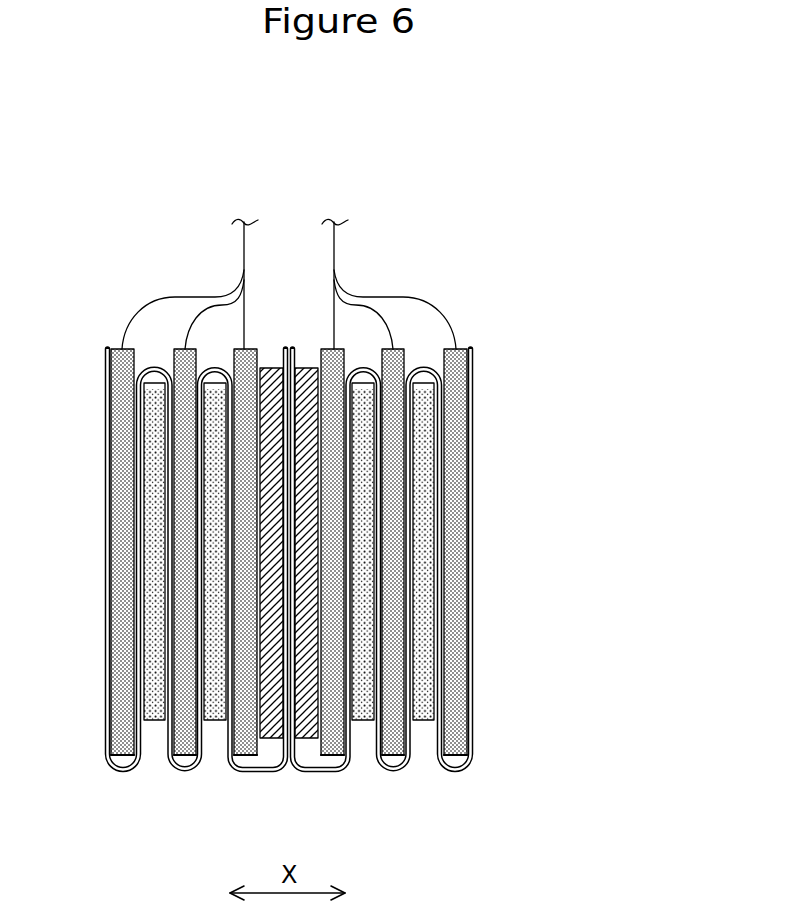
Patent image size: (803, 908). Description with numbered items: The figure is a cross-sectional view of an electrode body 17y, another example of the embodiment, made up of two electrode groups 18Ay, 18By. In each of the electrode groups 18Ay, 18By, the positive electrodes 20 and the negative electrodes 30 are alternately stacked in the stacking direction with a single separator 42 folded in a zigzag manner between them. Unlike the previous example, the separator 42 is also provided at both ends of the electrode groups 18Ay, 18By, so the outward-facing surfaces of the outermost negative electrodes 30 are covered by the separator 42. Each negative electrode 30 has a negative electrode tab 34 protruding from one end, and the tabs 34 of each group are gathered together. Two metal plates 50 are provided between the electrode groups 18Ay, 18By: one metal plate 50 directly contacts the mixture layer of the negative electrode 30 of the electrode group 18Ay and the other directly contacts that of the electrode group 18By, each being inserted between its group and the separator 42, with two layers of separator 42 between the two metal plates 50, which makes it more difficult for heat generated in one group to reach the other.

The electrode body 17y is at (538, 218).
The electrode group 18Ay is at (133, 287).
The electrode group 18By is at (442, 287).
The negative electrode tab 34 is at (287, 248).
The negative electrode 30 is at (118, 748).
The positive electrode 20 is at (153, 742).
The separator 42 is at (195, 762).
The metal plate 50 is at (280, 745).